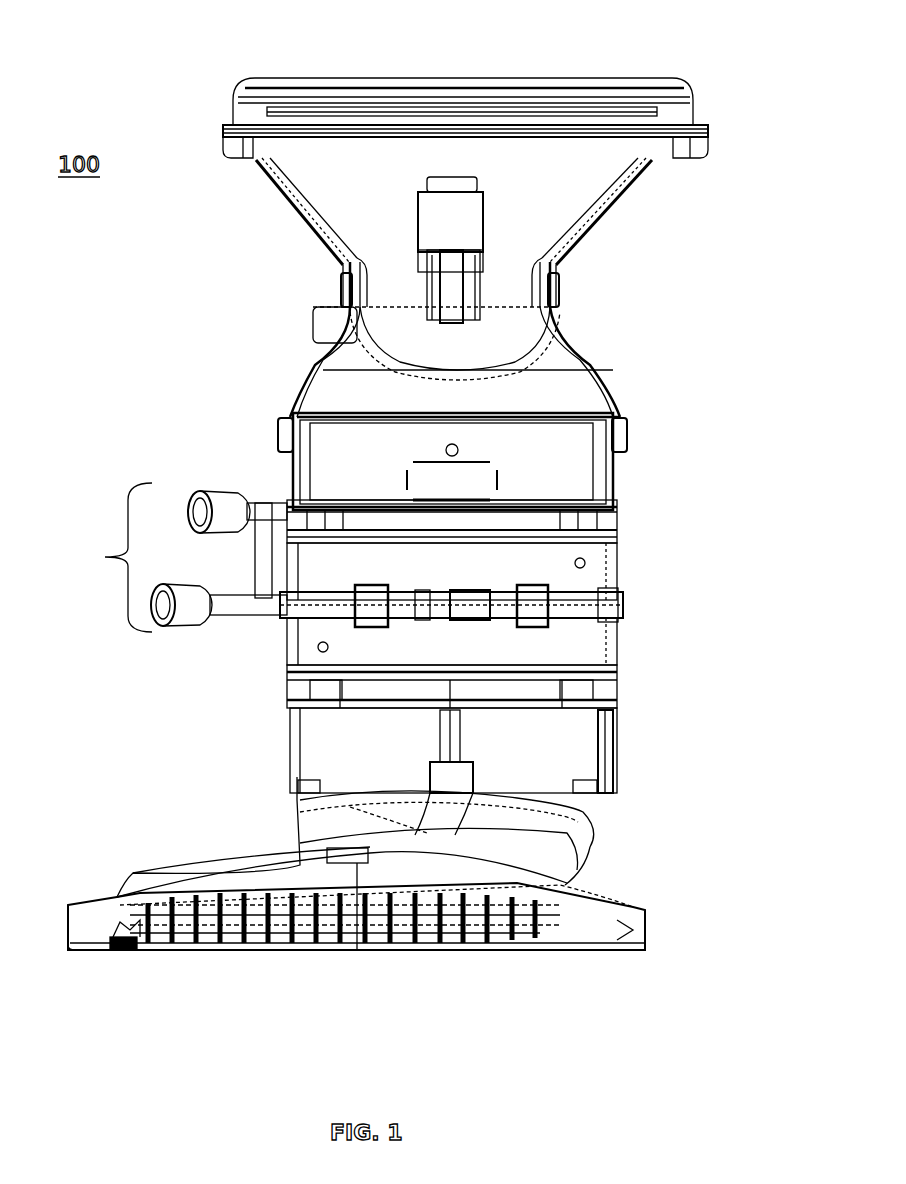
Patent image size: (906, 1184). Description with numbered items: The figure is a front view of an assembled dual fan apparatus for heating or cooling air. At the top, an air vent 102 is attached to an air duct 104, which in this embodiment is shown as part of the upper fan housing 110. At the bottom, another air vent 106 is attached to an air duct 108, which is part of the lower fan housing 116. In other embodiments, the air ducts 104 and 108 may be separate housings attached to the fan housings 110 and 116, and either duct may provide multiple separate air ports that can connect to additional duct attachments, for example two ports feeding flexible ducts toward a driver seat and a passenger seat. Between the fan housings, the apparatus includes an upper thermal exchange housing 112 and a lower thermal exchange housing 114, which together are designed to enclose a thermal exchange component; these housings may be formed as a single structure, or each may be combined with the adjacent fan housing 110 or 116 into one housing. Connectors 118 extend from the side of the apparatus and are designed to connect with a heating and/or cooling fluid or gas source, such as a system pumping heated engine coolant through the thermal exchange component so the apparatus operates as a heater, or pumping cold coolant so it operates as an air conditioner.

The air vent 102 is at (413, 62).
The air duct 104 is at (658, 206).
The air vent 106 is at (351, 972).
The air duct 108 is at (585, 882).
The upper fan housing 110 is at (635, 450).
The upper thermal exchange housing 112 is at (635, 561).
The lower thermal exchange housing 114 is at (635, 638).
The lower fan housing 116 is at (635, 751).
The connectors 118 is at (160, 557).